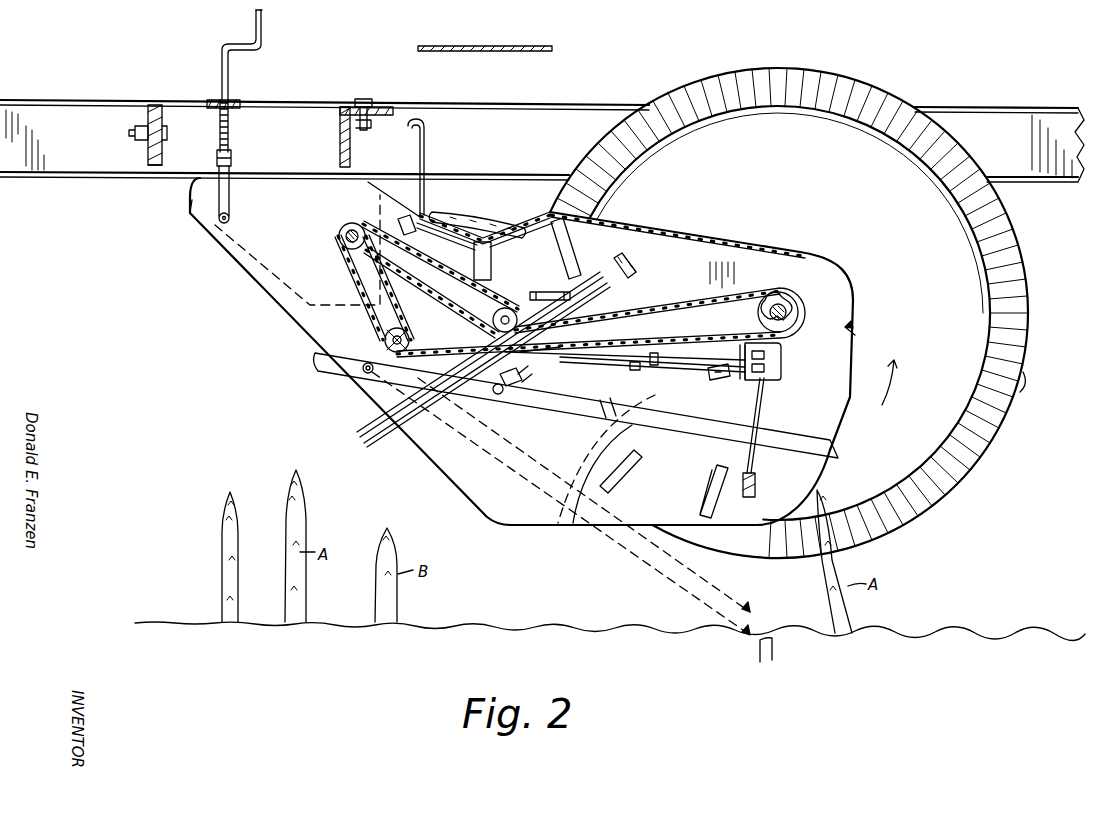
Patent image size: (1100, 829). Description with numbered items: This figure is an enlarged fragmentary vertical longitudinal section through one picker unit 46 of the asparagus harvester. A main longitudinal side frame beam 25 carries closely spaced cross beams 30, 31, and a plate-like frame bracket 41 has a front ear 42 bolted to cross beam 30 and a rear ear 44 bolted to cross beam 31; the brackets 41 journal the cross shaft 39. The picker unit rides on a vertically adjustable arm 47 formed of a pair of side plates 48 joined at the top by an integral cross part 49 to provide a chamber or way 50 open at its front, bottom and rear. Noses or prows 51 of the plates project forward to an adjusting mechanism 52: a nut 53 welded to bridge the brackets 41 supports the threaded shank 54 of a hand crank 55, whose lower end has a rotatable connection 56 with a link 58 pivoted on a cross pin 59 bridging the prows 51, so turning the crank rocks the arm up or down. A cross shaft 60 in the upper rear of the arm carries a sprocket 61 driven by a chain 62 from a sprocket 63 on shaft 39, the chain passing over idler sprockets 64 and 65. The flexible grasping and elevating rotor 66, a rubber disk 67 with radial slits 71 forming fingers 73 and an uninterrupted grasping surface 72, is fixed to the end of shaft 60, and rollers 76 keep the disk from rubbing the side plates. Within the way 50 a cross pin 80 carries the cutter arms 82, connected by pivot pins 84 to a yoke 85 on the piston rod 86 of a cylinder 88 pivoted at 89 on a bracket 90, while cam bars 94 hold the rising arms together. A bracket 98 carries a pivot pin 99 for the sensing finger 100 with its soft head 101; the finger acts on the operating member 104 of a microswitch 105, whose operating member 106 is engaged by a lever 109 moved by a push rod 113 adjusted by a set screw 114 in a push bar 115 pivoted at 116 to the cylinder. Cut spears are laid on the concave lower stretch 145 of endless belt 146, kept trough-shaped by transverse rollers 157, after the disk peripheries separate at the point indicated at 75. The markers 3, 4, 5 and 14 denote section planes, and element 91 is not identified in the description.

The main longitudinal side frame beam 25 is at (1029, 106).
The section line / scraper bar 14 is at (515, 22).
The adjusting mechanism 52 is at (218, 46).
The hand crank 55 is at (263, 30).
The threaded vertical shank 54 is at (229, 135).
The rotatable connection 56 is at (234, 162).
The link 58 is at (232, 195).
The cross pin 59 is at (232, 217).
The nut 53 is at (232, 102).
The front ear 42 is at (164, 145).
The radial fingers 73 is at (132, 133).
The frame cross beam 30 is at (147, 156).
The frame cross beam 31 is at (340, 156).
The frame brackets 41 is at (314, 112).
The separation point of disk peripheral portions 75 is at (368, 97).
The rear ear 44 is at (378, 142).
The picker unit 46 is at (848, 257).
The noses or elevated prows 51 is at (193, 206).
The integral cross part 49 is at (788, 250).
The rubber disk 67 is at (848, 204).
The chamber or way 50 is at (674, 270).
The flexible spear grasping and elevating rotor 66 is at (880, 80).
The radial slits 71 is at (990, 238).
The uninterrupted grasping surface 72 is at (975, 243).
The vertically adjustable arm 47 is at (865, 333).
The side plates 48 is at (854, 357).
The section line 3- 3 is at (160, 183).
The section line 4- 4 is at (330, 348).
The section line 5- 5 is at (697, 447).
The cross shaft 39 is at (339, 237).
The sprocket 63 is at (372, 264).
The idler sprocket 64 is at (402, 325).
The idler sprocket 65 is at (502, 308).
The cylinder 88 is at (615, 302).
The chain 62 is at (773, 290).
The sprocket 61 is at (758, 317).
The cross shaft 60 is at (788, 316).
The concave lower stretch 145 is at (445, 215).
The endless belt 146 is at (544, 212).
The transverse rollers 157 is at (430, 246).
The pivotal mounting 89 is at (573, 255).
The bracket 90 is at (624, 261).
The rollers 76 is at (543, 294).
The knife bar 91 is at (838, 452).
The cross pin 80 is at (366, 373).
The pivot pins 84 is at (497, 394).
The yoke 85 is at (511, 390).
The piston rod 86 is at (530, 387).
The pivot 116 is at (554, 345).
The push bar 115 is at (628, 360).
The lever 109 is at (734, 352).
The push rod 113 is at (675, 367).
The set screw 114 is at (646, 380).
The operating member 106 is at (720, 376).
The microswitch 105 is at (742, 380).
The horizontally moving operating member 104 is at (776, 345).
The bracket 98 is at (780, 353).
The horizontal pivot pin 99 is at (780, 368).
The cutter arms 82 is at (690, 398).
The sensing finger 100 is at (764, 412).
The head 101 is at (756, 481).
The cam bars 94 is at (626, 430).